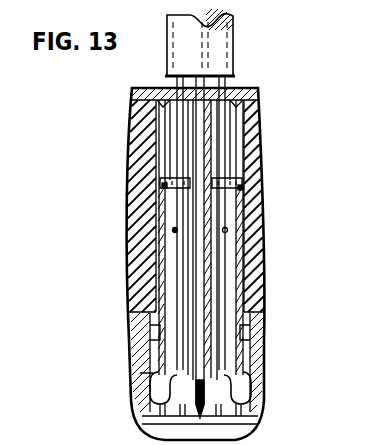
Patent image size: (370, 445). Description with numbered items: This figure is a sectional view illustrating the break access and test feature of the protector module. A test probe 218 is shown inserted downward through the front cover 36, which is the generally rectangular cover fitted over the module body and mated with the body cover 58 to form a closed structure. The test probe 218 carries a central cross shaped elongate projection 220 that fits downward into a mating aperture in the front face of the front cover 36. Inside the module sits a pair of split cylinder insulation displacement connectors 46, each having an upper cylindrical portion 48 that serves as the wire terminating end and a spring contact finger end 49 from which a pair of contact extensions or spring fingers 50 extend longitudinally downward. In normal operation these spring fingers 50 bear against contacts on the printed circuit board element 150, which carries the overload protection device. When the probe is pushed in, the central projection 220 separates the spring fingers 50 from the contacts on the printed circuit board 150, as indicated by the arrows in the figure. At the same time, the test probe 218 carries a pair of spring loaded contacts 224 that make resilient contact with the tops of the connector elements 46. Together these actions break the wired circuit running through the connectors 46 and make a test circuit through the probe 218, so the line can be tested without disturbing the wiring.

The test probe 218 is at (232, 36).
The central cross shaped elongate projection 220 is at (205, 108).
The spring loaded contacts 224 is at (241, 128).
The front cover 36 is at (130, 176).
The connector 46 is at (243, 189).
The upper cylindrical portion 48 is at (250, 245).
The body cover 58 is at (132, 366).
The spring fingers 50 is at (252, 385).
The spring contact finger end 49 is at (250, 406).
The printed circuit board element 150 is at (250, 422).